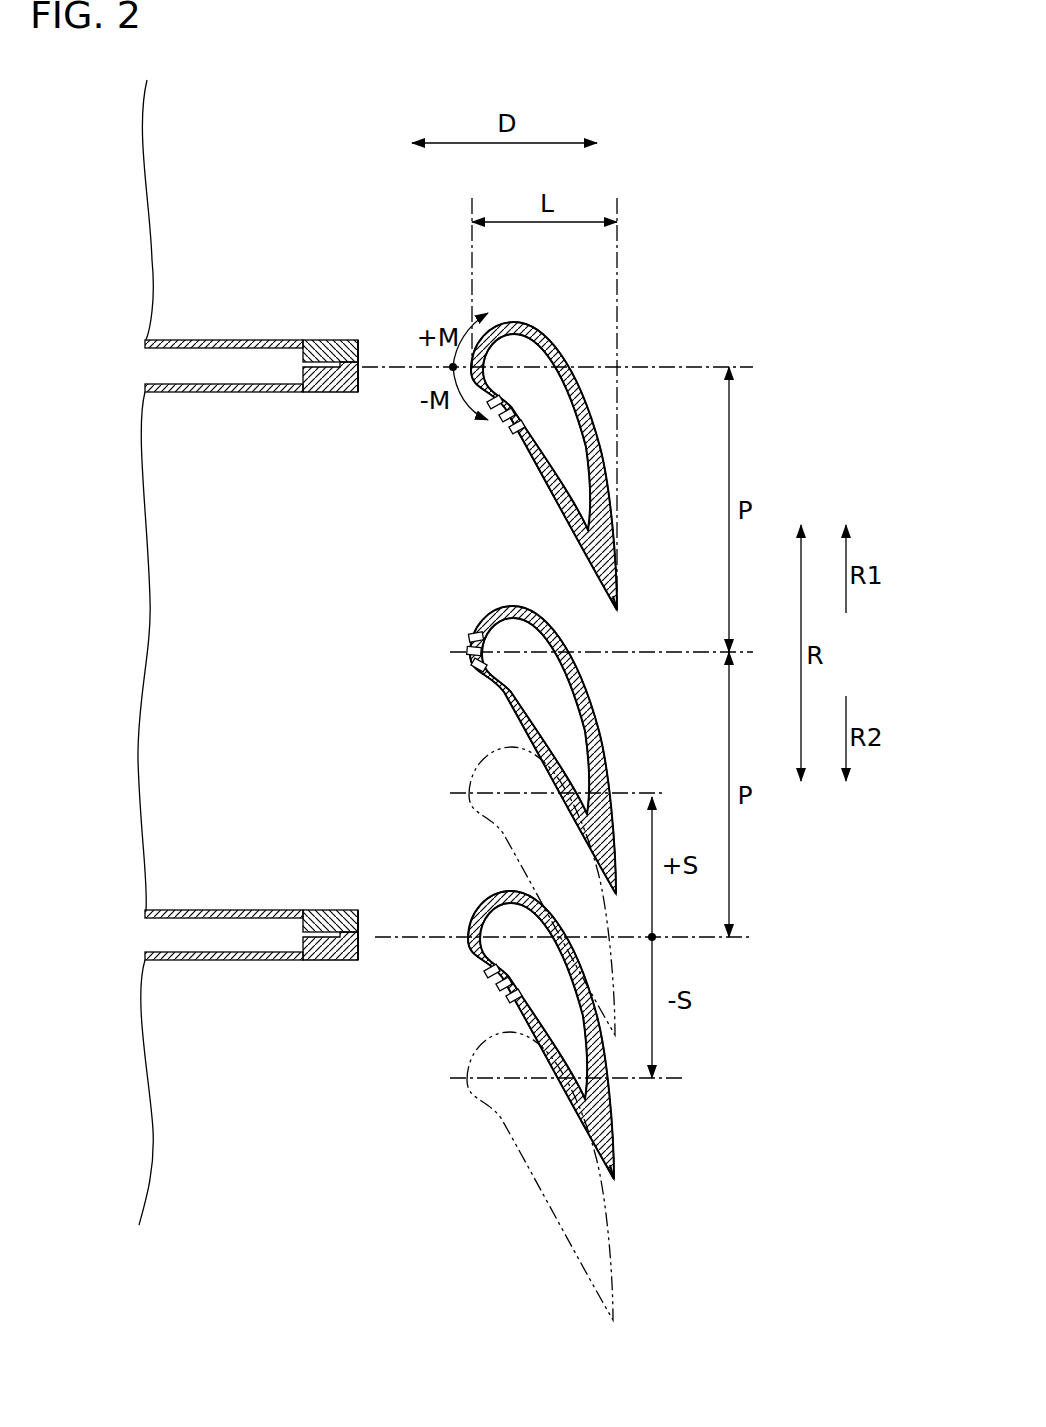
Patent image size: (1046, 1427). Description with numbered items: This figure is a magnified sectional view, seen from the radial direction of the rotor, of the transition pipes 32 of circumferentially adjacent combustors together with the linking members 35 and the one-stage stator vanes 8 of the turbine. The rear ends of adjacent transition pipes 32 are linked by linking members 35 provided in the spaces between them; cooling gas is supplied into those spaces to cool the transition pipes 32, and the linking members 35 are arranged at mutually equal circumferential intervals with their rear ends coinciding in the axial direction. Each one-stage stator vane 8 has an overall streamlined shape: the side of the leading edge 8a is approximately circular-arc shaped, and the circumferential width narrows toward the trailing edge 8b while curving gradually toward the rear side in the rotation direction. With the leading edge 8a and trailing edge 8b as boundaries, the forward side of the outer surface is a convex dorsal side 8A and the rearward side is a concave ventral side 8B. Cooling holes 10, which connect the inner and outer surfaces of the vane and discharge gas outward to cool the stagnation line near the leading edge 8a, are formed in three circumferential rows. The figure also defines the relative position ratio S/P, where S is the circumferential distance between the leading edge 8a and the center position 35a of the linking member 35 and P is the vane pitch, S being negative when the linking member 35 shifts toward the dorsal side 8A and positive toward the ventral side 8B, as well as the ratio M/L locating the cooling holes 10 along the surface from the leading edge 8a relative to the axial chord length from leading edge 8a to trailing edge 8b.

The one-stage stator vane 8 is at (546, 327).
The leading edge 8a is at (466, 362).
The trailing edge 8b is at (622, 612).
The dorsal side 8A is at (602, 446).
The ventral side 8B is at (558, 514).
The cooling hole 10 is at (495, 403).
The transition pipe 32 is at (190, 210).
The linking member 35 is at (336, 340).
The center position of the linking member 35a is at (361, 367).